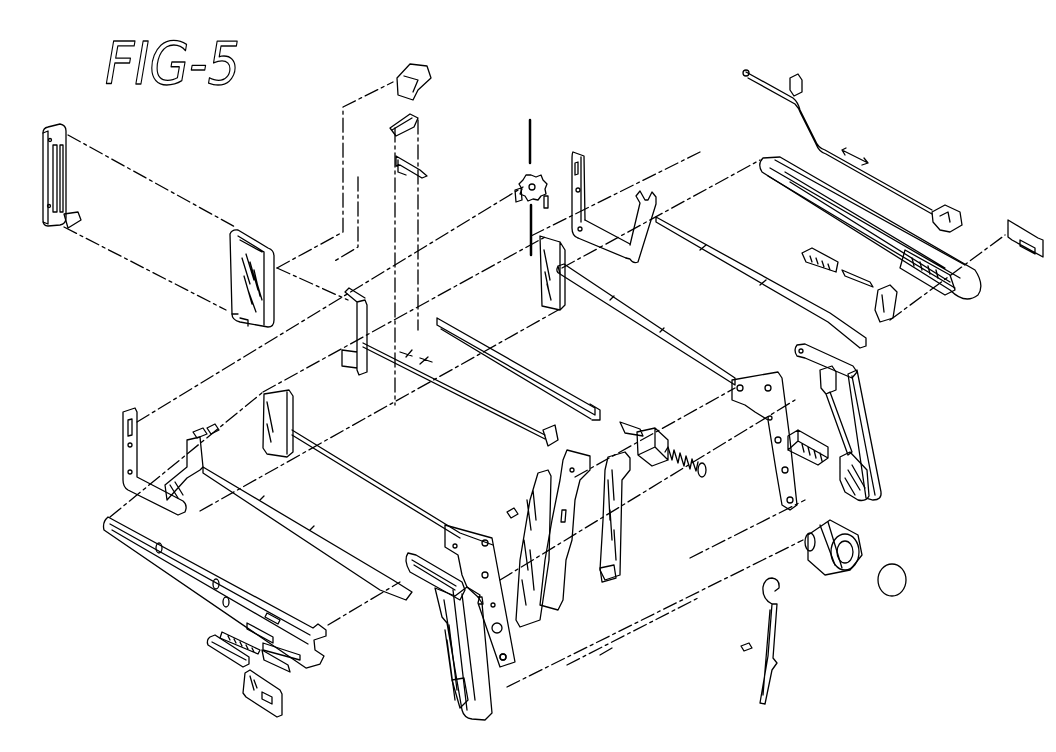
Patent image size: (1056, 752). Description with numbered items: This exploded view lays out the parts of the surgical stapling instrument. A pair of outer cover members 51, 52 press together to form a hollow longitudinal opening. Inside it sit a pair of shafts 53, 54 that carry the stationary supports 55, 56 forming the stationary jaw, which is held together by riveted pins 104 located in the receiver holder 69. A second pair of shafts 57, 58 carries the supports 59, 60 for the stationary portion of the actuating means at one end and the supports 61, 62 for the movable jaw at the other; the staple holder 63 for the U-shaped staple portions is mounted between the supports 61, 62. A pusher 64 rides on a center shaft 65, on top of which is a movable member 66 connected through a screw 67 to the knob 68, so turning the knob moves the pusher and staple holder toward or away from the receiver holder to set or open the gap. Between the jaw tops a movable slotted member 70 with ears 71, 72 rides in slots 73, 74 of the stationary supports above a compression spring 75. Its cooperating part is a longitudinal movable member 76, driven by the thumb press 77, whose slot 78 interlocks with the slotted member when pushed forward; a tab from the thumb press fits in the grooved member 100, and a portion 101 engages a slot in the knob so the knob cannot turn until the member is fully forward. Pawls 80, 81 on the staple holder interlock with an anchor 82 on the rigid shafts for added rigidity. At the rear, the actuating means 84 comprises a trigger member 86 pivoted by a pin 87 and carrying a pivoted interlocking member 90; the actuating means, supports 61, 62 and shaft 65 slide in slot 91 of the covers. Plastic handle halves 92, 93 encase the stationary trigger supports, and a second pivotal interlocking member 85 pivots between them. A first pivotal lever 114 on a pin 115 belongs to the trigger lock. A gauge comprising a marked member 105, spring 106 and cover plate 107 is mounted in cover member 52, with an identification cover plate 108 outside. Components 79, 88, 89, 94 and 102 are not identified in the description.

The outer cover member 51 is at (768, 160).
The outer cover member 52 is at (130, 545).
The shaft 53 is at (727, 258).
The shaft 54 is at (300, 528).
The stationary support 55 is at (590, 186).
The stationary support 56 is at (124, 468).
The shaft 57 is at (660, 322).
The shaft 58 is at (407, 498).
The support for stationary portion of actuating means 59 is at (776, 441).
The support for stationary portion of actuating means 60 is at (497, 717).
The support for movable jaw 61 is at (555, 300).
The support for movable jaw 62 is at (280, 450).
The holder for U-shaped staple portion 63 is at (260, 215).
The pusher 64 is at (346, 336).
The shaft 65 is at (449, 392).
The movable member 66 is at (557, 389).
The screw 67 is at (643, 433).
The knob 68 is at (856, 526).
The holder for receiver portions 69 is at (64, 170).
The movable slotted member 70 is at (538, 175).
The ear 71 is at (546, 198).
The ear 72 is at (516, 196).
The slot 73 is at (571, 162).
The slot 74 is at (126, 422).
The compression spring 75 is at (529, 240).
The longitudinal movable member 76 is at (818, 136).
The thumb press 77 is at (948, 209).
The slot 78 is at (770, 58).
The ratchet wheel 79 is at (520, 178).
The pawl 80 is at (418, 72).
The pawl 81 is at (424, 170).
The anchor 82 is at (414, 120).
The trigger or actuating means 84 is at (606, 655).
The second pivotal interlocking member 85 is at (822, 464).
The trigger member 86 is at (534, 620).
The pin 87 is at (510, 510).
The lever plate 88 is at (621, 505).
The hole 89 is at (508, 658).
The pivoted interlocking member 90 is at (561, 466).
The slot 91 is at (928, 298).
The plastic handle half 92 is at (870, 428).
The plastic handle half 93 is at (457, 702).
The tab 94 is at (613, 578).
The grooved member 100 is at (808, 255).
The portion 101 is at (850, 278).
The block 102 is at (880, 323).
The riveted pins 104 is at (42, 212).
The marked member 105 is at (285, 668).
The spring 106 is at (221, 633).
The cover plate 107 is at (222, 655).
The cover plate 108 is at (244, 696).
The first pivotal lever 114 is at (778, 620).
The pin 115 is at (742, 650).